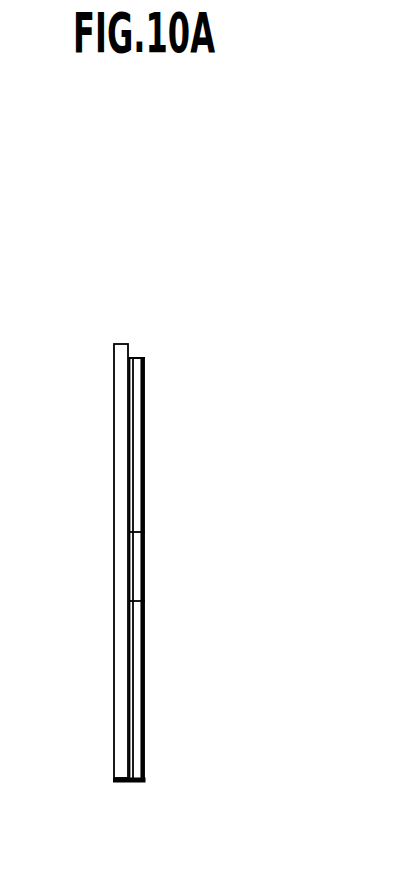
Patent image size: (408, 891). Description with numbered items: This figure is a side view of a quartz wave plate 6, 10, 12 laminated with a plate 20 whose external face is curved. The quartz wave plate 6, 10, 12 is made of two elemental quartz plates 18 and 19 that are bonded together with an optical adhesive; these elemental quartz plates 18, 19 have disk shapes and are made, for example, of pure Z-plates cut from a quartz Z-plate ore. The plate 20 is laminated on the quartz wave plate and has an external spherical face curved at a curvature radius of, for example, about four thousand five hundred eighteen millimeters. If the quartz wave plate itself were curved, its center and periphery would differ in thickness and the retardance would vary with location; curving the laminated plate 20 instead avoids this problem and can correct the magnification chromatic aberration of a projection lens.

The quartz wave plate 6 is at (174, 481).
The quartz wave plate 10 is at (174, 481).
The quartz wave plate 12 is at (224, 319).
The elemental quartz plate 18 is at (146, 380).
The elemental quartz plate 19 is at (139, 357).
The plate 20 is at (114, 406).